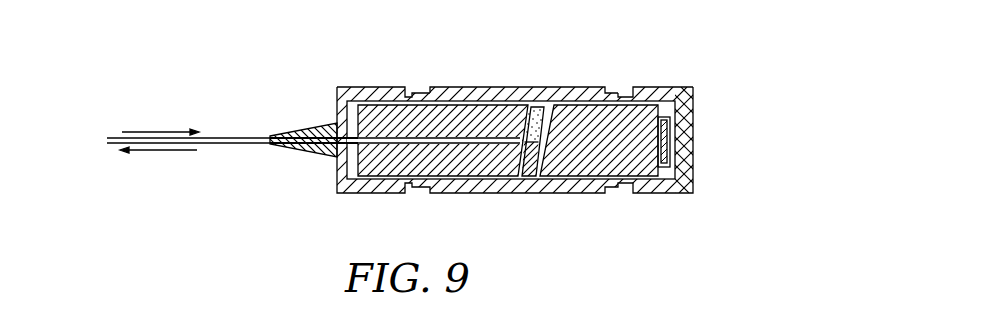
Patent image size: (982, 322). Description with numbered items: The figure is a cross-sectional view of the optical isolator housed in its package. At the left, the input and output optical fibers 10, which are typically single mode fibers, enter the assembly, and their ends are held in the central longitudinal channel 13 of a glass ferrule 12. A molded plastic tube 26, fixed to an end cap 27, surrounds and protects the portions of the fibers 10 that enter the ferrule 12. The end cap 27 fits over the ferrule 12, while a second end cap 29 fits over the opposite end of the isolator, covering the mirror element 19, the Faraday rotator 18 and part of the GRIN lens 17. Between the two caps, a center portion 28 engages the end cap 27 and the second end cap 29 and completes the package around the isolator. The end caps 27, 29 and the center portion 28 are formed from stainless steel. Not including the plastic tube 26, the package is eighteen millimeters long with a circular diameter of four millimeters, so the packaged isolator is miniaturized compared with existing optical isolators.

The input and output optical fibers 10 is at (210, 146).
The glass ferrule 12 is at (450, 110).
The central longitudinal channel 13 is at (363, 190).
The GRIN lens 17 is at (538, 182).
The Faraday rotator 18 is at (672, 147).
The mirror element 19 is at (672, 137).
The molded plastic tube 26 is at (302, 134).
The end cap 27 is at (382, 90).
The center portion 28 is at (521, 97).
The second end cap 29 is at (662, 92).